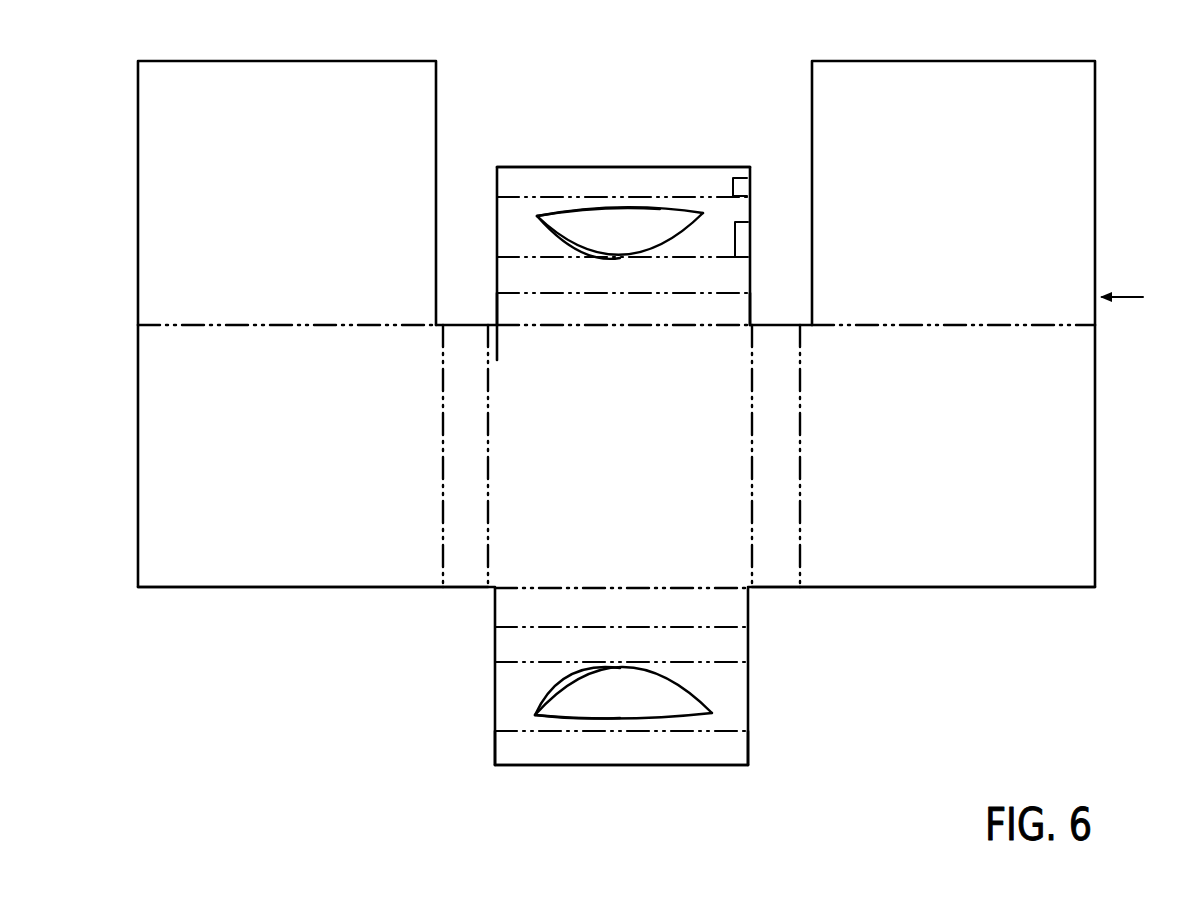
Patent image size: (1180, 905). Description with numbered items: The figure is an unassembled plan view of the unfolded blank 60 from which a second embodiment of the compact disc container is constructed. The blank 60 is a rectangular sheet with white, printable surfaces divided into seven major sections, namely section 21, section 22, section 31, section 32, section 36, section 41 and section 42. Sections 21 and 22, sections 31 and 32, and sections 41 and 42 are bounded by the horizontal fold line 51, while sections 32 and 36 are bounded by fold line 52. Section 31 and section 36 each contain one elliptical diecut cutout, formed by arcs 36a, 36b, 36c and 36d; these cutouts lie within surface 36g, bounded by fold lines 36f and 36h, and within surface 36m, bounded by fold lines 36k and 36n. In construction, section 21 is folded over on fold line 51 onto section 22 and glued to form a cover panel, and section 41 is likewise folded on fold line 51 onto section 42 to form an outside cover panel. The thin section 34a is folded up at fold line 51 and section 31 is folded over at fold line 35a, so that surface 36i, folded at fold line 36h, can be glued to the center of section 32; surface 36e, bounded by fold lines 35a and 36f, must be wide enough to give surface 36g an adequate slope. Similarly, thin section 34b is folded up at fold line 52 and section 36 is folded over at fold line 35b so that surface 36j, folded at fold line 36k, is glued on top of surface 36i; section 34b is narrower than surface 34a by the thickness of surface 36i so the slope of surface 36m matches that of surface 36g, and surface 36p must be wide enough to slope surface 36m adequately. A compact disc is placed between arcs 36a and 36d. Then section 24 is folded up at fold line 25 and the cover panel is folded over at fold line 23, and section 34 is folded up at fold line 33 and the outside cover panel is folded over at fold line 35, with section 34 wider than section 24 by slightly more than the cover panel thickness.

The section 21 is at (948, 93).
The section 22 is at (998, 573).
The fold line 23 is at (800, 481).
The section 24 is at (783, 570).
The fold line 25 is at (752, 477).
The section 31 is at (612, 184).
The section 32 is at (498, 356).
The fold line 33 is at (488, 489).
The section 34 is at (455, 573).
The thin section 34a is at (710, 315).
The thin section 34b is at (720, 606).
The fold line 35 is at (443, 489).
The fold line 35a is at (708, 295).
The fold line 35b is at (746, 627).
The section 36 is at (617, 749).
The arc 36a is at (548, 233).
The arc 36b is at (545, 214).
The arc 36c is at (545, 695).
The arc 36d is at (540, 715).
The surface 36e is at (723, 267).
The fold line 36f is at (748, 222).
The surface 36g is at (728, 205).
The fold line 36h is at (748, 168).
The surface 36i is at (719, 177).
The surface 36j is at (748, 765).
The fold line 36k is at (747, 731).
The surface 36m is at (733, 716).
The fold line 36n is at (747, 664).
The surface 36p is at (727, 651).
The section 41 is at (280, 85).
The section 42 is at (218, 571).
The fold line 51 is at (258, 326).
The fold line 52 is at (584, 588).
The blank 60 is at (1140, 298).